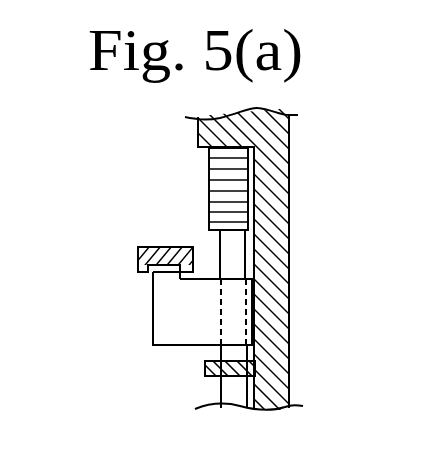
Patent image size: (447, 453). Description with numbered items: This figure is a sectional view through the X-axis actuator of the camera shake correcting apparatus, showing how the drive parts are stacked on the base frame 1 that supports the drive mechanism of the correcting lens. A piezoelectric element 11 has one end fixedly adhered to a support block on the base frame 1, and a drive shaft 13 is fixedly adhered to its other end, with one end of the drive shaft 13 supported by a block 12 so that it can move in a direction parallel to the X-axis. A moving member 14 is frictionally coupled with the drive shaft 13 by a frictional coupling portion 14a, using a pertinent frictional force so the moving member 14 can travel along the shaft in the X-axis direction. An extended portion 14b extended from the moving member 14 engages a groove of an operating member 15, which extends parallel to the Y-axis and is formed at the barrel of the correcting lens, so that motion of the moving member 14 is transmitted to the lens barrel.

The base frame 1 is at (288, 173).
The piezoelectric element 11 is at (209, 172).
The block 12 is at (210, 377).
The drive shaft 13 is at (220, 241).
The moving member 14 is at (153, 323).
The frictional coupling portion 14a is at (222, 336).
The extended portion 14b is at (155, 282).
The operating member 15 is at (138, 257).